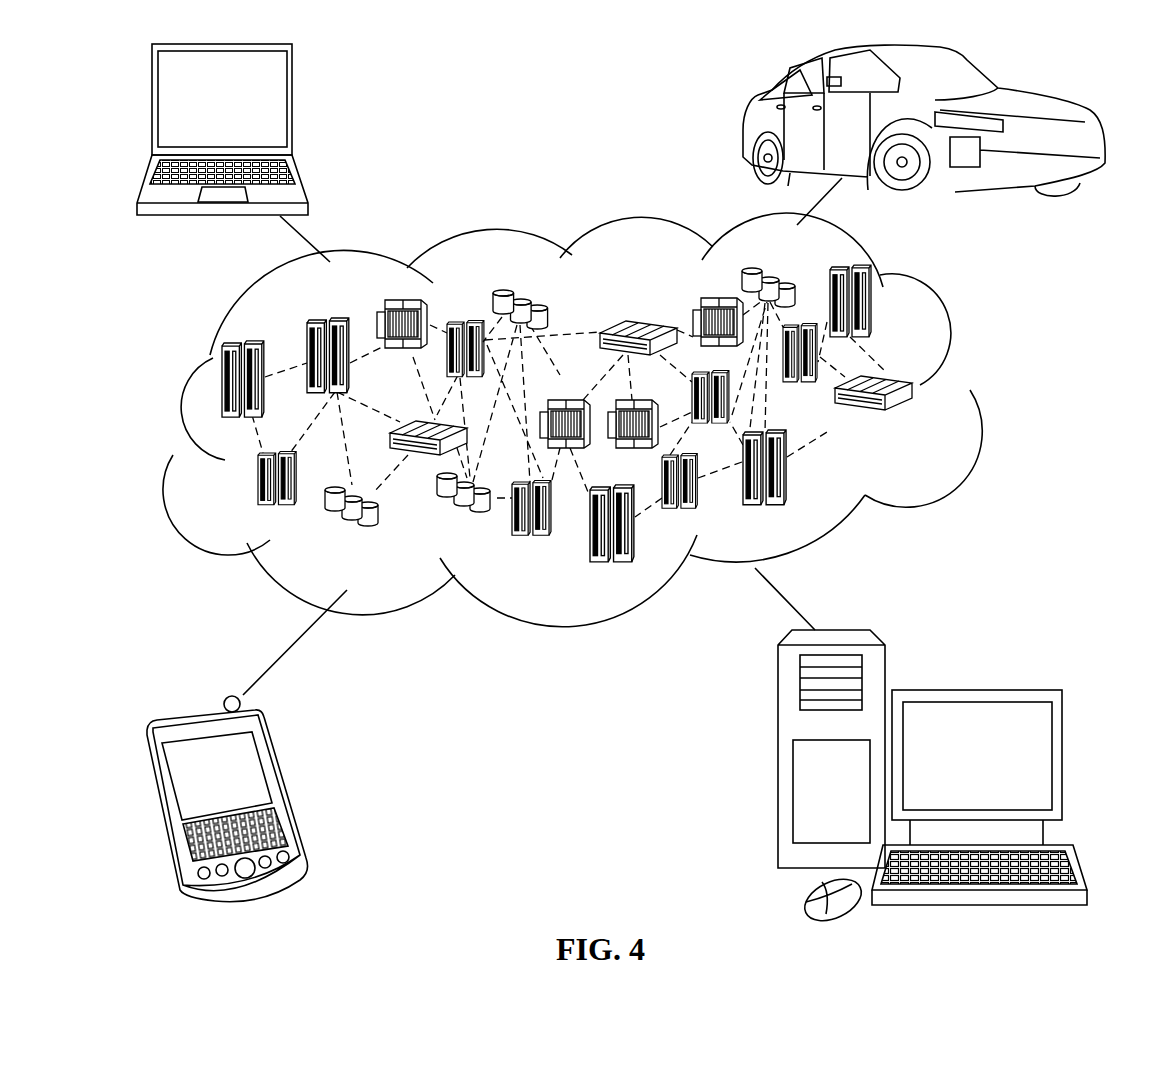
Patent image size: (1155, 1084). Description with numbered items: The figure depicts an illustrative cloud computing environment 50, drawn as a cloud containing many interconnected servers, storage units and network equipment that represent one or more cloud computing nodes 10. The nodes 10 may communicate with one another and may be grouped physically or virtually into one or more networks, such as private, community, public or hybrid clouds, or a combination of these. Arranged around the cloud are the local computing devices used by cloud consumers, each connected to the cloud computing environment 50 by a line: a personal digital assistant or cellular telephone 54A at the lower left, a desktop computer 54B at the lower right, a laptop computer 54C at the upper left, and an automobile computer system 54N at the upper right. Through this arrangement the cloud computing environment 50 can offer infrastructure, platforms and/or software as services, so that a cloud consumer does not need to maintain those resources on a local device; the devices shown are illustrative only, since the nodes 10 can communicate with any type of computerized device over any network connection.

The cloud computing node 10 is at (918, 424).
The cloud computing environment 50 is at (603, 420).
The personal digital assistant or cellular telephone 54A is at (285, 787).
The desktop computer 54B is at (975, 688).
The laptop computer 54C is at (293, 107).
The automobile computer system 54N is at (748, 122).